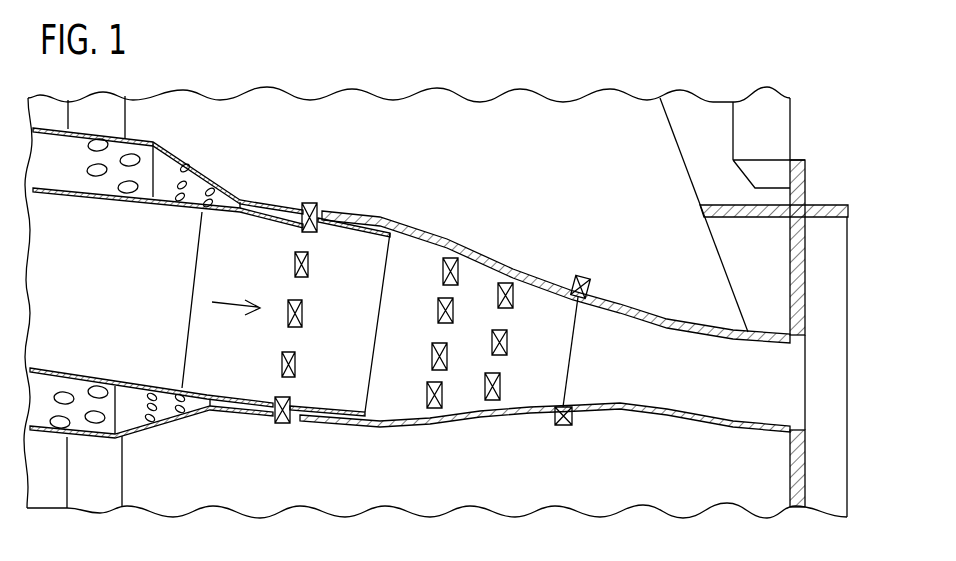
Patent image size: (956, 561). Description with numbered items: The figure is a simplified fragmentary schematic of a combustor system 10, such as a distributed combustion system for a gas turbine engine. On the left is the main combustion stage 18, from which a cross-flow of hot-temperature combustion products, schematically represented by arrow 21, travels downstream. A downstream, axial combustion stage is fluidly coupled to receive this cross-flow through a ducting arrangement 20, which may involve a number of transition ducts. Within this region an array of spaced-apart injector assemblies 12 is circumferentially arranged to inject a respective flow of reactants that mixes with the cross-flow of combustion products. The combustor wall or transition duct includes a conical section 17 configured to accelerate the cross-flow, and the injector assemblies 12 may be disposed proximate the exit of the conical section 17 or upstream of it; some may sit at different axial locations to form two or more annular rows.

The combustor system 10 is at (563, 52).
The injector assemblies 12 is at (296, 255).
The conical section 17 is at (477, 420).
The main combustion stage 18 is at (118, 302).
The ducting arrangement 20 is at (407, 193).
The arrow 21 is at (228, 305).